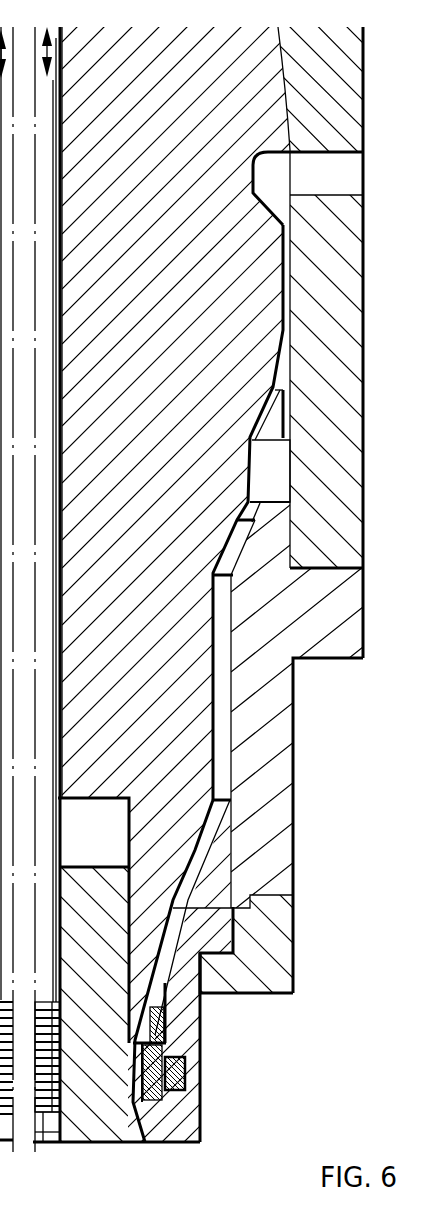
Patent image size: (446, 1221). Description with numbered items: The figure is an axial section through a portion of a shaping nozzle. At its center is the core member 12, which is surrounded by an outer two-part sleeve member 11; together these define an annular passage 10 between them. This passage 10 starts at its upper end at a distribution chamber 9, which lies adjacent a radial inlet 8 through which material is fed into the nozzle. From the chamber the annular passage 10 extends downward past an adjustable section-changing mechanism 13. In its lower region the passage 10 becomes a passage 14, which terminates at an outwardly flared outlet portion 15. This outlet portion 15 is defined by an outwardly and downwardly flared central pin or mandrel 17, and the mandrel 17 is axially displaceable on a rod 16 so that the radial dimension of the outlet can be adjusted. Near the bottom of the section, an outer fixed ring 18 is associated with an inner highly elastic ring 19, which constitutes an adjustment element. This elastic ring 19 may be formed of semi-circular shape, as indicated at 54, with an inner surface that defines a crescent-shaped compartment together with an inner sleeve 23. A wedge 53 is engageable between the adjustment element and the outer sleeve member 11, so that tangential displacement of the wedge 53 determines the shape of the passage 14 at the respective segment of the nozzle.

The radial inlet 8 is at (340, 170).
The distribution chamber 9 is at (272, 174).
The annular passage 10 is at (290, 253).
The outer two-part sleeve member 11 is at (333, 298).
The core member 12 is at (252, 47).
The adjustable section-changing mechanism 13 is at (273, 471).
The passage 14 is at (220, 628).
The outwardly flared outlet portion 15 is at (142, 1140).
The rod 16 is at (43, 1145).
The central pin or mandrel 17 is at (98, 1128).
The outer fixed ring 18 is at (190, 1115).
The inner highly elastic ring 19 is at (203, 1042).
The inner sleeve 23 is at (173, 1143).
The wedge 53 is at (180, 1080).
The semi-circular ring 54 is at (187, 1063).